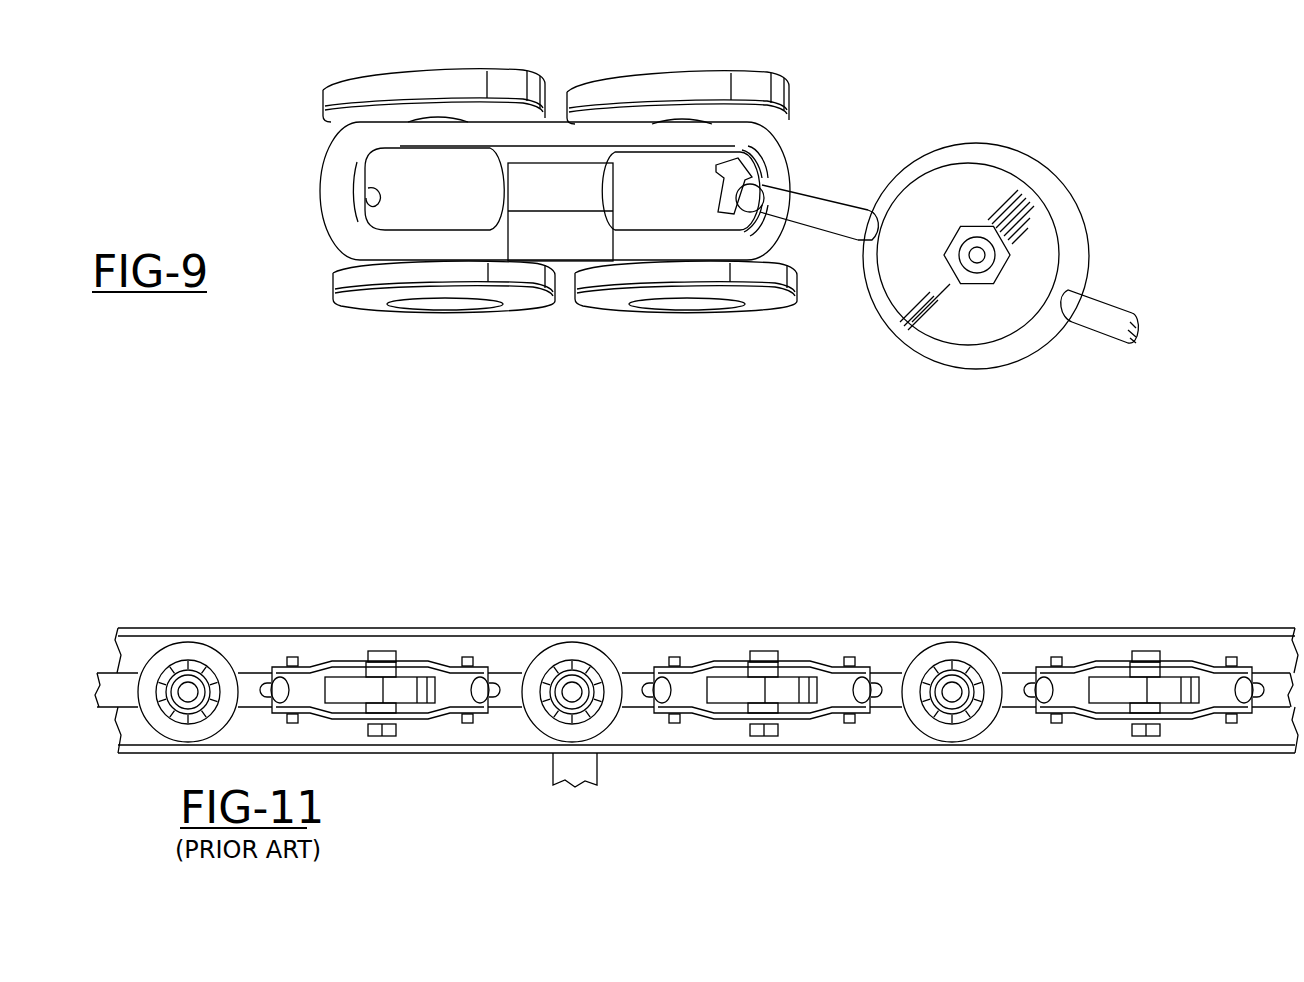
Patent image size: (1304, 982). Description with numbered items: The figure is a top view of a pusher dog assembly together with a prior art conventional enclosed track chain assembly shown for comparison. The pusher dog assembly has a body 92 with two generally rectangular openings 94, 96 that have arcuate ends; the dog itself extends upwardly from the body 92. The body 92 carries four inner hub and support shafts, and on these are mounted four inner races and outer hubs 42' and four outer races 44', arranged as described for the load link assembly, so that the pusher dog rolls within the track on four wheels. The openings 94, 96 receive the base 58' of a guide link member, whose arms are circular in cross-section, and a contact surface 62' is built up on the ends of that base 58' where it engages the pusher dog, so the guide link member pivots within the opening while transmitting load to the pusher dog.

The body 92 is at (565, 162).
The opening 94 is at (382, 198).
The opening 96 is at (698, 222).
The outer race 44' is at (555, 203).
The inner race and outer hub 42' is at (444, 333).
The base 58' is at (937, 249).
The contact surface 62' is at (793, 135).